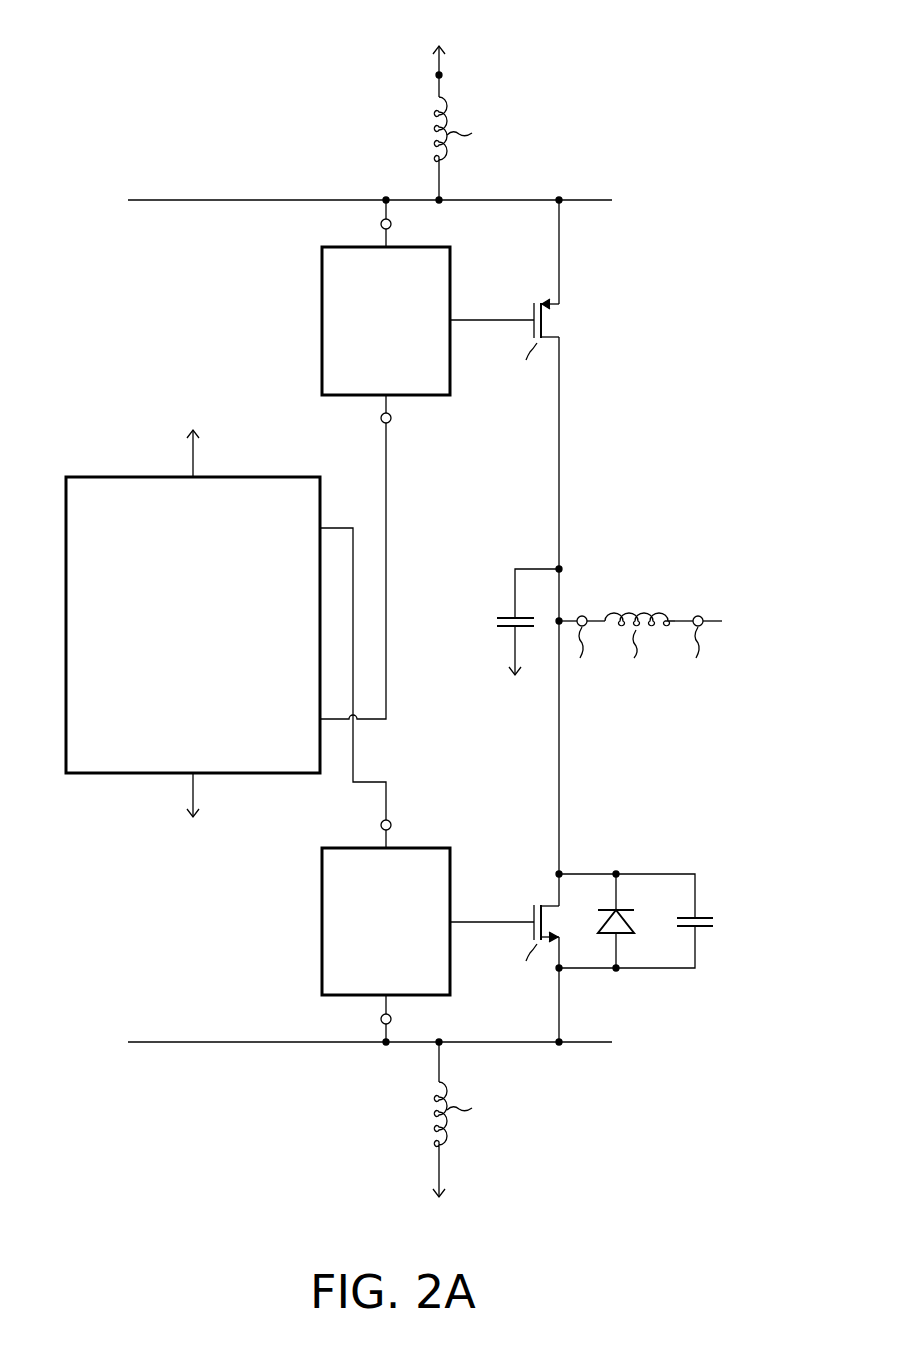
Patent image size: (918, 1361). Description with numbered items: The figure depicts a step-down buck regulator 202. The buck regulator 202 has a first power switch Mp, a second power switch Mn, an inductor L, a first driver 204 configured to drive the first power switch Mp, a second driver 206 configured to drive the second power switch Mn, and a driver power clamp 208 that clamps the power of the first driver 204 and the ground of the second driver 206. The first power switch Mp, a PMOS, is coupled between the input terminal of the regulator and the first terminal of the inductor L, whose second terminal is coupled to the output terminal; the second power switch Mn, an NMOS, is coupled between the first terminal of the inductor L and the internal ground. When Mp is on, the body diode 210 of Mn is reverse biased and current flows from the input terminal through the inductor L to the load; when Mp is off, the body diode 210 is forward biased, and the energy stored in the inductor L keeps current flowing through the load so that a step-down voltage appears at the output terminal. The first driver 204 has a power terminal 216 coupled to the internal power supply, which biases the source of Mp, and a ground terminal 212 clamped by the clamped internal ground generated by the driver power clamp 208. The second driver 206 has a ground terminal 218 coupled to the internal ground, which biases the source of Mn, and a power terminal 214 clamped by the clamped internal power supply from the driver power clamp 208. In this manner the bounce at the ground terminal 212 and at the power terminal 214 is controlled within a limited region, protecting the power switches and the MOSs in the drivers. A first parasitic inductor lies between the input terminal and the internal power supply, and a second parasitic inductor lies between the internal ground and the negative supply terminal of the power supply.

The buck regulator 202 is at (80, 40).
The first driver 204 is at (416, 247).
The second driver 206 is at (352, 997).
The driver power clamp 208 is at (66, 477).
The body diode 210 is at (626, 920).
The ground terminal 212 is at (380, 418).
The power terminal 214 is at (392, 826).
The power terminal 216 is at (380, 224).
The ground terminal 218 is at (392, 1020).